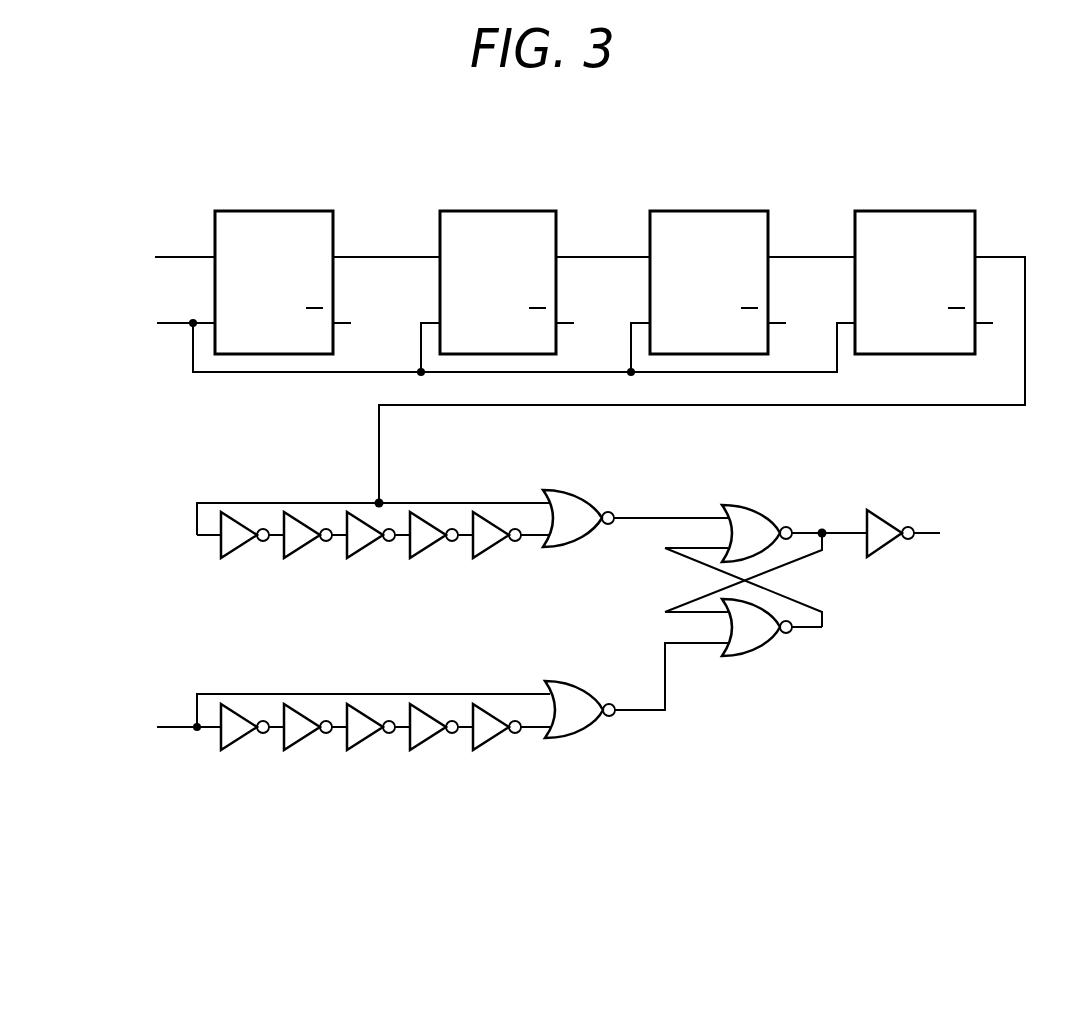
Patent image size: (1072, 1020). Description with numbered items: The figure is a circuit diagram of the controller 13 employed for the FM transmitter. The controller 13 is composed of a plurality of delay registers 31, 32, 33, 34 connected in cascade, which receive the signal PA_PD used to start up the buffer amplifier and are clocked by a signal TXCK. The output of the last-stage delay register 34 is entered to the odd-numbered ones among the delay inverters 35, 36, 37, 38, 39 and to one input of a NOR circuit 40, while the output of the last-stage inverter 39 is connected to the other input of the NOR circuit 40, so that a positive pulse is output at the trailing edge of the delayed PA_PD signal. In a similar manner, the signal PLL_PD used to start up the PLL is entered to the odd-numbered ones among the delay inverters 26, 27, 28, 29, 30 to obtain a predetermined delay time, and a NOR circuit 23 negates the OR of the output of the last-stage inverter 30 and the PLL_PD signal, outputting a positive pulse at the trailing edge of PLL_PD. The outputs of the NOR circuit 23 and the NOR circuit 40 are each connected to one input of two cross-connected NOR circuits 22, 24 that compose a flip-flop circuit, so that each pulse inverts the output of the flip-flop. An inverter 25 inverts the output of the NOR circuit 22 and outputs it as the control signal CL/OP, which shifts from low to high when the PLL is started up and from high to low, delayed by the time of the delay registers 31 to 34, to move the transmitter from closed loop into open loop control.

The controller 13 is at (655, 133).
The delay register 31 is at (294, 211).
The delay register 32 is at (516, 211).
The delay register 33 is at (728, 211).
The last-stage delay register 34 is at (933, 211).
The delay inverter 35 is at (237, 548).
The delay inverter 36 is at (300, 548).
The delay inverter 37 is at (363, 548).
The delay inverter 38 is at (426, 548).
The last-stage delay inverter 39 is at (489, 548).
The NOR circuit 40 is at (581, 492).
The delay inverter 26 is at (237, 740).
The delay inverter 27 is at (300, 740).
The delay inverter 28 is at (363, 740).
The delay inverter 29 is at (426, 740).
The last-stage delay inverter 30 is at (489, 740).
The NOR circuit 23 is at (582, 683).
The NOR circuit 22 is at (758, 507).
The NOR circuit 24 is at (761, 656).
The inverter 25 is at (885, 546).